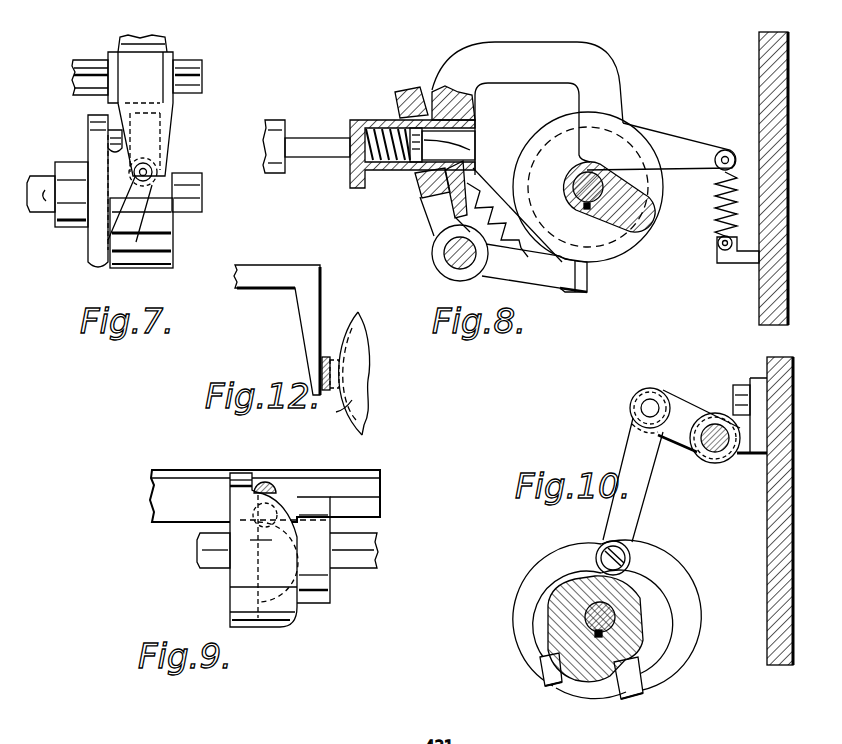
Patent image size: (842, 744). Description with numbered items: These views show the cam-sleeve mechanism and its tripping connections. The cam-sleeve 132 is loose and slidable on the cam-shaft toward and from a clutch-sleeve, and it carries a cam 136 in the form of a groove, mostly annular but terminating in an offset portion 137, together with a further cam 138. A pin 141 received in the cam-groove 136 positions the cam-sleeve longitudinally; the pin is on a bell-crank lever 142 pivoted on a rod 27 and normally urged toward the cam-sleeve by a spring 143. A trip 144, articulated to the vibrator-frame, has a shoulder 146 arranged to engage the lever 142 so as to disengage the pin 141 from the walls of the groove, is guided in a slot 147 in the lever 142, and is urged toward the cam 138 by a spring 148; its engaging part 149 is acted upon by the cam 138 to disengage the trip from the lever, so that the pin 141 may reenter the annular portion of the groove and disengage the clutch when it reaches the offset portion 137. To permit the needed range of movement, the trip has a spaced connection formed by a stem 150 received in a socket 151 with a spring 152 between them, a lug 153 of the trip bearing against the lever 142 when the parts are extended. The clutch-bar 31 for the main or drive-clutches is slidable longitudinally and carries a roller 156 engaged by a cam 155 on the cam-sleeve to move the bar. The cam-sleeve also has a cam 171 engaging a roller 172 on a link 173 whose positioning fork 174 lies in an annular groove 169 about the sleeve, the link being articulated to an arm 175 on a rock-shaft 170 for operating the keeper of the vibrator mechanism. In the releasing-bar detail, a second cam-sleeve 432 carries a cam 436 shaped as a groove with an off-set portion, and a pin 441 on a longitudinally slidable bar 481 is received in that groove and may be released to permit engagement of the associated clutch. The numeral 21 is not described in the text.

In FIG. 7, the shaft 21 is at (45, 205).
In FIG. 8, the shaft 21 is at (648, 238).
In FIG. 9, the shaft 21 is at (215, 555).
In FIG. 10, the shaft 21 is at (616, 616).
In FIG. 7, the rod 27 is at (190, 70).
In FIG. 8, the rod 27 is at (446, 262).
In FIG. 9, the clutch-bar 31 is at (190, 512).
In FIG. 8, the cam-sleeve 132 is at (643, 238).
In FIG. 7, the cam 136 is at (108, 130).
In FIG. 7, the offset portion 137 is at (130, 193).
In FIG. 8, the cam 138 is at (648, 208).
In FIG. 7, the pin 141 is at (150, 198).
In FIG. 8, the pin 141 is at (587, 276).
In FIG. 7, the bell-crank lever 142 is at (155, 127).
In FIG. 8, the bell-crank lever 142 is at (432, 214).
In FIG. 8, the spring 143 is at (448, 232).
In FIG. 8, the trip 144 is at (535, 43).
In FIG. 8, the shoulder 146 is at (368, 188).
In FIG. 8, the slot 147 is at (397, 110).
In FIG. 8, the spring 148 is at (716, 213).
In FIG. 8, the engaging part 149 is at (630, 160).
In FIG. 8, the stem 150 is at (306, 143).
In FIG. 8, the socket 151 is at (455, 142).
In FIG. 8, the spring 152 is at (400, 170).
In FIG. 8, the lug 153 is at (462, 206).
In FIG. 9, the cam 155 is at (293, 517).
In FIG. 9, the roller 156 is at (270, 485).
In FIG. 10, the annular groove 169 is at (643, 658).
In FIG. 10, the rock-shaft 170 is at (705, 428).
In FIG. 10, the cam 171 is at (570, 657).
In FIG. 10, the roller 172 is at (635, 568).
In FIG. 10, the link 173 is at (628, 514).
In FIG. 10, the positioning fork 174 is at (628, 700).
In FIG. 10, the arm 175 is at (683, 406).
In FIG. 12, the cam-sleeve 432 is at (370, 400).
In FIG. 12, the cam 436 is at (325, 411).
In FIG. 12, the pin 441 is at (322, 368).
In FIG. 12, the bar 481 is at (298, 296).